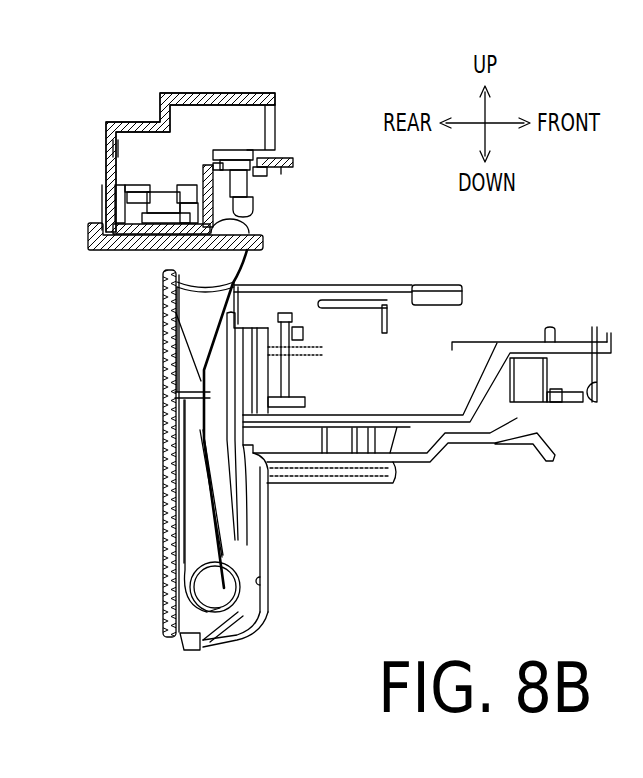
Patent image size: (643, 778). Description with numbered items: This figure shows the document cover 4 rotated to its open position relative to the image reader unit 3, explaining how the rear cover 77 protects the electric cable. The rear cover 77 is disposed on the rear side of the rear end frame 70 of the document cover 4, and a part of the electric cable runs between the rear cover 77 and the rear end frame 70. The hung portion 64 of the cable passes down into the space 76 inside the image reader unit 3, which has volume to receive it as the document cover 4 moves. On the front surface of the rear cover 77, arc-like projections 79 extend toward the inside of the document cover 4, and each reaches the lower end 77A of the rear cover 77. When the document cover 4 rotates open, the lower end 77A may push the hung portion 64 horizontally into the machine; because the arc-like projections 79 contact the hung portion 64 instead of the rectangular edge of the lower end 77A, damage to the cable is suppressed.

The image reader unit 3 is at (163, 492).
The document cover 4 is at (97, 142).
The rear end frame 70 is at (123, 122).
The rear cover 77 is at (133, 250).
The lower end 77A is at (257, 223).
The projection 79 is at (265, 220).
The hung portion 64 is at (243, 270).
The space 76 is at (262, 579).